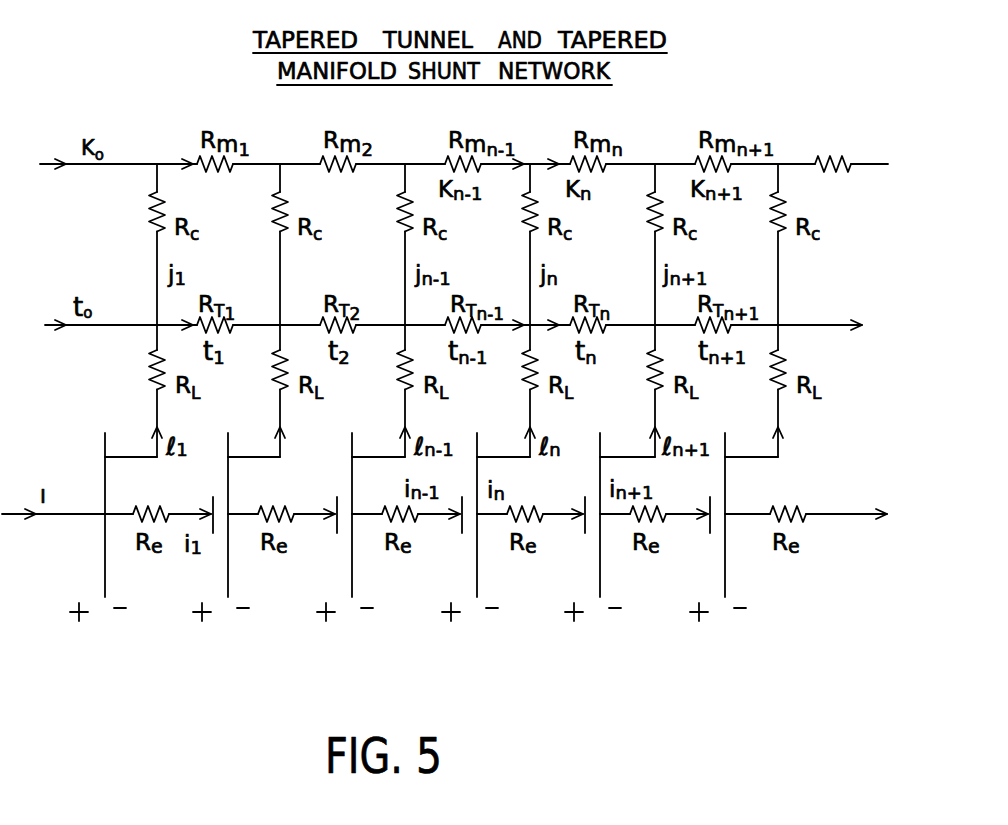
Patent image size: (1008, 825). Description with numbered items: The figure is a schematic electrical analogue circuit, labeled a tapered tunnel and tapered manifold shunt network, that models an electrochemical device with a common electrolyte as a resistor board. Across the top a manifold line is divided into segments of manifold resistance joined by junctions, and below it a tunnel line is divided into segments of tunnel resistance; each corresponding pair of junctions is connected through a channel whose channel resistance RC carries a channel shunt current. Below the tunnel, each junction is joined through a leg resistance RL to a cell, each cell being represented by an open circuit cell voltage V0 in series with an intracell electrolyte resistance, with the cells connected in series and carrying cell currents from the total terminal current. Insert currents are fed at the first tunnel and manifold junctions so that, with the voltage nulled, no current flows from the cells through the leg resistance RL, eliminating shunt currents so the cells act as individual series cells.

The channel resistance RC is at (467, 310).
The leg resistance RL is at (467, 370).
The open circuit cell voltage V0 is at (408, 620).